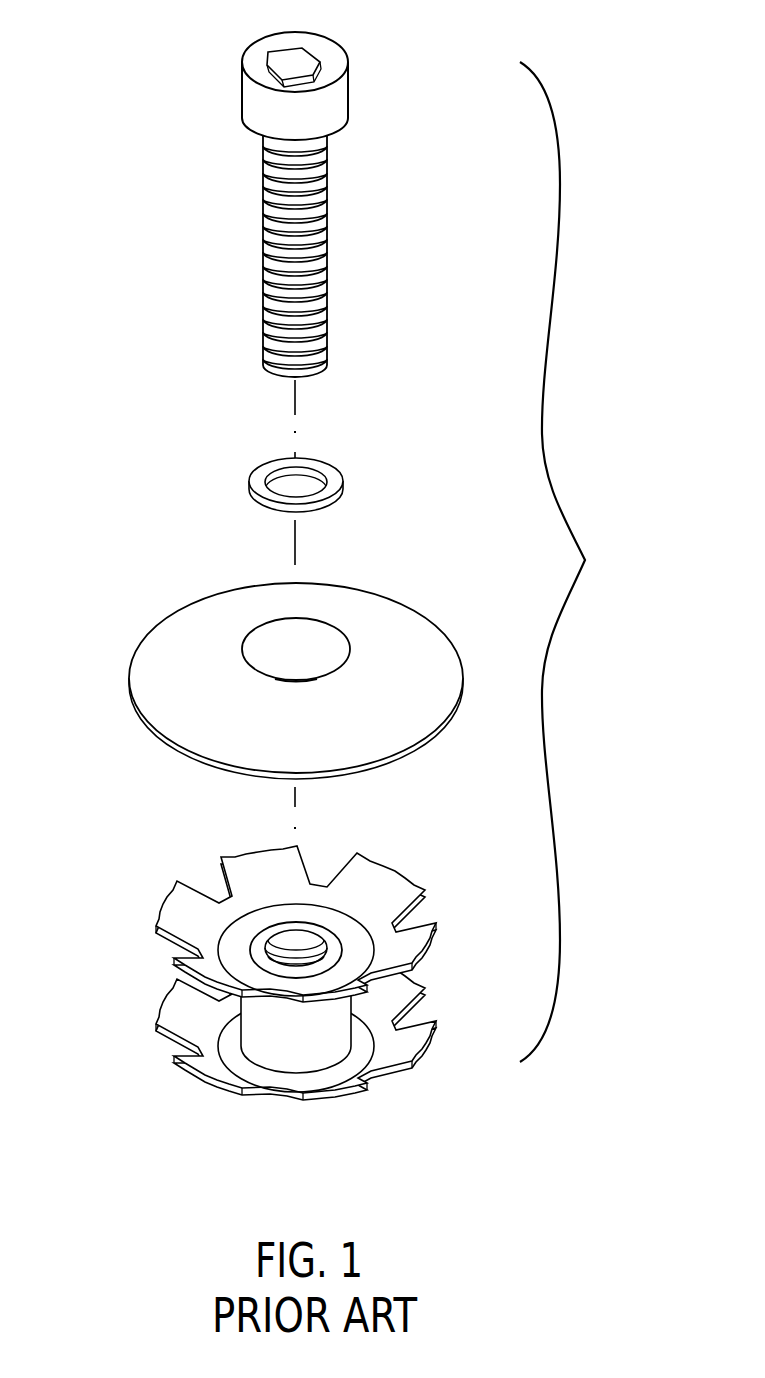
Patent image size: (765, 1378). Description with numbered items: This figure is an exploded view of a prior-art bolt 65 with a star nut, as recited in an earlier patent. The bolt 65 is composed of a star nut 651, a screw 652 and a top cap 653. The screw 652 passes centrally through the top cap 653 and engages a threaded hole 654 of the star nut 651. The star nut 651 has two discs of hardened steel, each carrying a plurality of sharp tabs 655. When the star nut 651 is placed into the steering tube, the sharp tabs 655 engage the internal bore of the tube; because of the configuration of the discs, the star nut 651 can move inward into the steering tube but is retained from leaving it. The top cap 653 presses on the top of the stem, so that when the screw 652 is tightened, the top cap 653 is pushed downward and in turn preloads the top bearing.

The bolt 65 is at (574, 562).
The star nut 651 is at (257, 941).
The screw 652 is at (210, 116).
The top cap 653 is at (161, 606).
The threaded hole 654 is at (333, 942).
The sharp tabs 655 is at (257, 941).